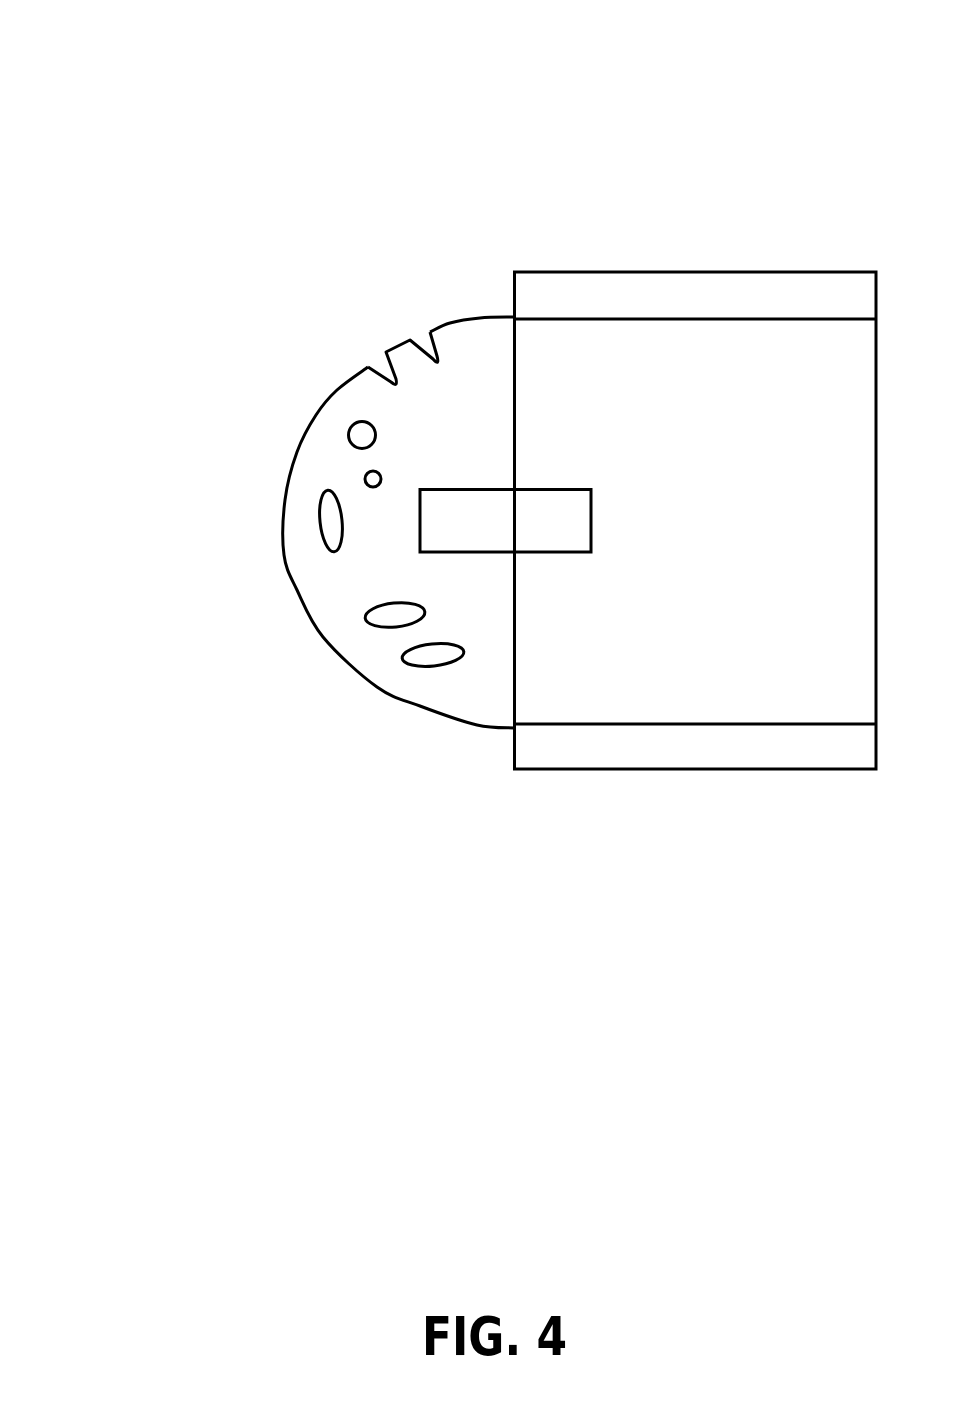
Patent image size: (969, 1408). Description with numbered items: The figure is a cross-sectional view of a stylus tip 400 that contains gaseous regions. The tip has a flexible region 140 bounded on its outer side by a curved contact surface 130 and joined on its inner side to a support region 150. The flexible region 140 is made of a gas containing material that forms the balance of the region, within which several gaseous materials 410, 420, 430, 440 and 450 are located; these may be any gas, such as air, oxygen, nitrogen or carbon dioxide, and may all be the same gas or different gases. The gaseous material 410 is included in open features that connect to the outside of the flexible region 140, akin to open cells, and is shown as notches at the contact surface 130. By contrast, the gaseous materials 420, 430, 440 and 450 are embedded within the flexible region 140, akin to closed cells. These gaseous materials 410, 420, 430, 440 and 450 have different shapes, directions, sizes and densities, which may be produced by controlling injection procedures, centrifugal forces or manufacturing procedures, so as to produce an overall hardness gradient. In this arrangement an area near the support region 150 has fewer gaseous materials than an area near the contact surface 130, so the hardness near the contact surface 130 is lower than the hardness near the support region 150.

The tip 400 is at (136, 112).
The contact surface 130 is at (375, 685).
The flexible region 140 is at (477, 678).
The support region 150 is at (540, 523).
The gaseous material 410 is at (378, 348).
The gaseous material 420 is at (357, 430).
The gaseous material 430 is at (368, 478).
The gaseous material 440 is at (328, 518).
The gaseous material 450 is at (392, 615).